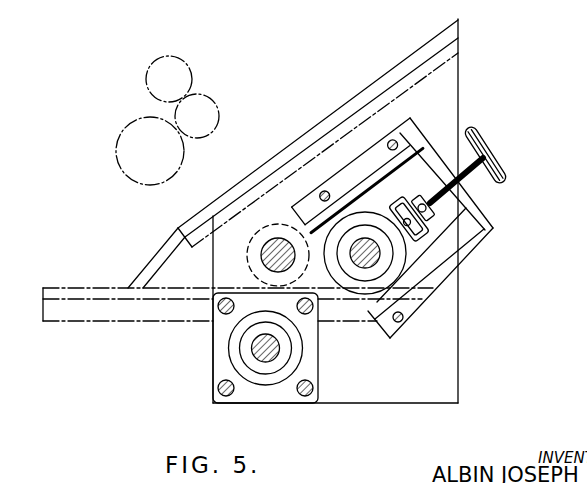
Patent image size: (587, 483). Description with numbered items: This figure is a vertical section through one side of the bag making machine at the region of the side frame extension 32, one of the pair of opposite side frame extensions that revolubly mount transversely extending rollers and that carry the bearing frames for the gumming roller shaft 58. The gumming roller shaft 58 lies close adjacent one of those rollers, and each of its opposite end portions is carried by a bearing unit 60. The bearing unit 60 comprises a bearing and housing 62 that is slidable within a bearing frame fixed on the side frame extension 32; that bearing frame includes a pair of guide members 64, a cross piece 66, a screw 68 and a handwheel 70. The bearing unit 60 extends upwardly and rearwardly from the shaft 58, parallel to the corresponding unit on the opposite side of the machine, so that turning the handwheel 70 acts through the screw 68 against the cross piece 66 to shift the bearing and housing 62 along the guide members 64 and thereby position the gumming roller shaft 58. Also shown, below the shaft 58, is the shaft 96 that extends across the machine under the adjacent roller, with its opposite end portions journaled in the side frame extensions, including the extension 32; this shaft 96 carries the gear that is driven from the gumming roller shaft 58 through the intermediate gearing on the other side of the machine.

The side frame extension 32 is at (447, 72).
The gumming roller shaft 58 is at (363, 263).
The bearing unit 60 is at (413, 133).
The bearing and housing 62 is at (358, 222).
The guide member 64 is at (373, 157).
The cross piece 66 is at (475, 207).
The screw 68 is at (473, 172).
The handwheel 70 is at (508, 175).
The shaft 96 is at (250, 346).